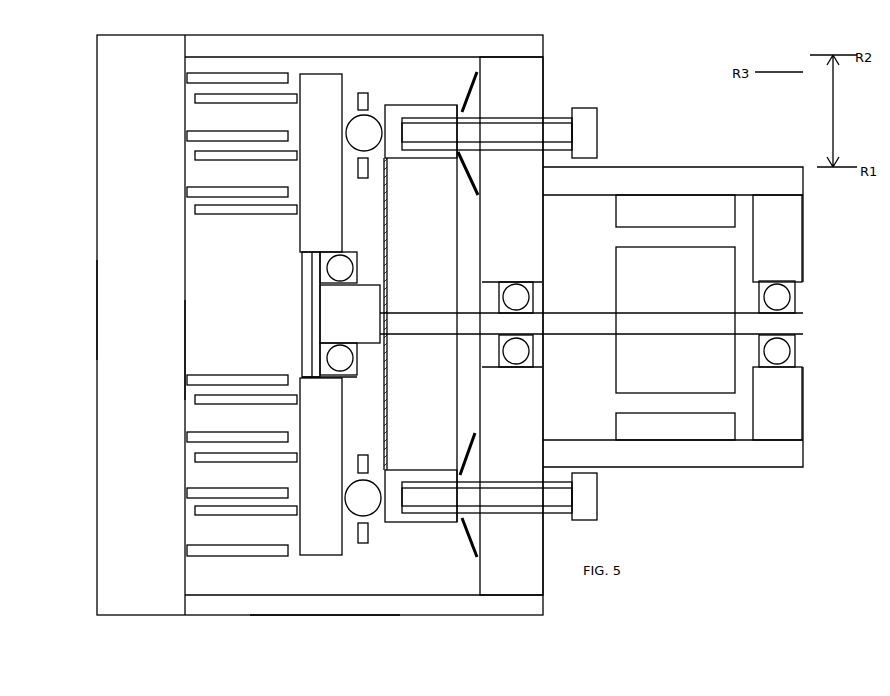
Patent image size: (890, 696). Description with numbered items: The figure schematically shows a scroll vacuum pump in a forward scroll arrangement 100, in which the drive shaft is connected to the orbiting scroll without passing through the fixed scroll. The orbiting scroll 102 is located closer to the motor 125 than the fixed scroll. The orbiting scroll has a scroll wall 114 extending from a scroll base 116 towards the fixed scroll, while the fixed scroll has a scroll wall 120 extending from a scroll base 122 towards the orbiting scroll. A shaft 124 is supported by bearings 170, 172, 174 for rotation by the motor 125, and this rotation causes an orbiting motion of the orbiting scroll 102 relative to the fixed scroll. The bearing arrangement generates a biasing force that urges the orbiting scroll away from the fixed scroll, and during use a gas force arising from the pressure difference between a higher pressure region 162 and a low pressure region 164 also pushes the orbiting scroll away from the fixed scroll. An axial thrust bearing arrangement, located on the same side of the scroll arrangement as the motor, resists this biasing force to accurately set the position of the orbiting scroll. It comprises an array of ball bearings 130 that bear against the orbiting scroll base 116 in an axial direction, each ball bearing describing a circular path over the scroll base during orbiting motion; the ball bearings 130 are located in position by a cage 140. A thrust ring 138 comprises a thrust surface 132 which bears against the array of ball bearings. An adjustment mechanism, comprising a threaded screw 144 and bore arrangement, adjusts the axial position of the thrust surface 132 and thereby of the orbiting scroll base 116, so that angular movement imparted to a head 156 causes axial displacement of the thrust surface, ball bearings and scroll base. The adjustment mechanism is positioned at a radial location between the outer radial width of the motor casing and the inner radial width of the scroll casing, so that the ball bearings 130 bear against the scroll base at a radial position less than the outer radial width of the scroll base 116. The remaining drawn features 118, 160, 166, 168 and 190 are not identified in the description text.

The forward scroll arrangement 100 is at (716, 518).
The orbiting scroll 102 is at (332, 183).
The scroll wall 114 is at (253, 517).
The scroll base 116 is at (300, 430).
The housing wall 118 is at (150, 183).
The scroll wall 120 is at (198, 557).
The scroll base 122 is at (183, 355).
The shaft 124 is at (795, 323).
The motor 125 is at (688, 290).
The ball bearings 130 is at (367, 140).
The thrust surface 132 is at (388, 112).
The thrust ring 138 is at (433, 256).
The cage 140 is at (365, 93).
The threaded screw 144 is at (513, 137).
The head 156 is at (590, 123).
The diagonal brace 160 is at (470, 172).
The higher pressure region 162 is at (228, 301).
The low pressure region 164 is at (377, 236).
The bottom direction arrow 166 is at (328, 624).
The left direction arrow 168 is at (63, 313).
The bearing 170 is at (797, 357).
The bearing 172 is at (535, 358).
The bearing 174 is at (317, 362).
The motor housing 190 is at (792, 182).